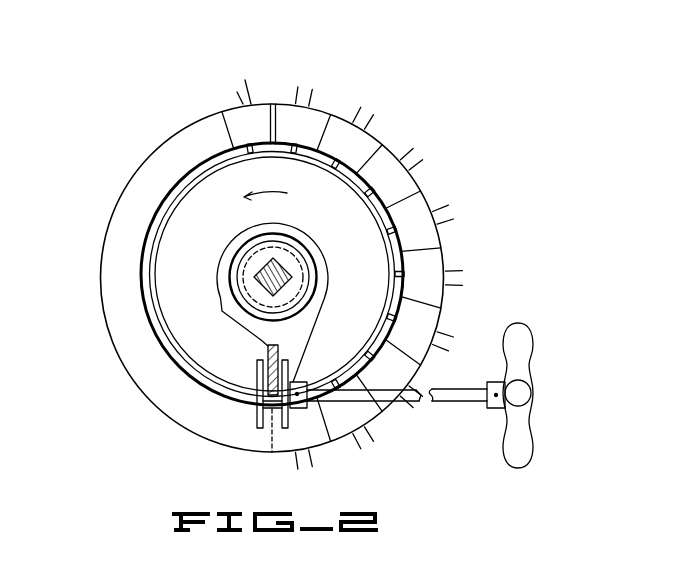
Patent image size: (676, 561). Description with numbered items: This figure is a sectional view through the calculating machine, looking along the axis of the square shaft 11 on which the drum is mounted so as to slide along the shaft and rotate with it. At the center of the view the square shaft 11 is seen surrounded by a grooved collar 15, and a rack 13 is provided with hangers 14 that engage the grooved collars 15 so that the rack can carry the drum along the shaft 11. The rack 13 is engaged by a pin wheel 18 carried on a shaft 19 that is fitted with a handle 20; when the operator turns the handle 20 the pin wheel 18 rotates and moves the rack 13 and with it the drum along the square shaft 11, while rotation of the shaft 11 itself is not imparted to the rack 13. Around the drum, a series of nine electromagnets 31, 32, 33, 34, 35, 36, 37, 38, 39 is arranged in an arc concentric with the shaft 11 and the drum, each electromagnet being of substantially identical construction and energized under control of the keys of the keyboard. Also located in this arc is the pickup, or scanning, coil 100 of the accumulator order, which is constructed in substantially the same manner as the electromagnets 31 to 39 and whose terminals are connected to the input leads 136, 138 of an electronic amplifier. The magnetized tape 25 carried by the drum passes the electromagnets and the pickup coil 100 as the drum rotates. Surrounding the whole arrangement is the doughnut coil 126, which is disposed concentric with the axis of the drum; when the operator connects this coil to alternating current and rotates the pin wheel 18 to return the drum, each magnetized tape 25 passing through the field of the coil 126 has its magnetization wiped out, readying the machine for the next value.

The square shaft 11 is at (272, 268).
The rack 13 is at (268, 349).
The hanger 14 is at (305, 338).
The grooved collar 15 is at (303, 261).
The pin wheel 18 is at (258, 371).
The shaft 19 is at (450, 402).
The handle 20 is at (529, 447).
The magnetized tape 25 is at (178, 192).
The electromagnet 31 is at (283, 135).
The electromagnet 32 is at (334, 155).
The electromagnet 33 is at (378, 193).
The electromagnet 34 is at (403, 240).
The electromagnet 35 is at (414, 289).
The electromagnet 36 is at (402, 348).
The electromagnet 37 is at (379, 383).
The electromagnet 38 is at (333, 428).
The electromagnet 39 is at (295, 439).
The pickup coil 100 is at (231, 135).
The doughnut coil 126 is at (108, 277).
The input lead 136 is at (237, 92).
The input lead 138 is at (245, 80).